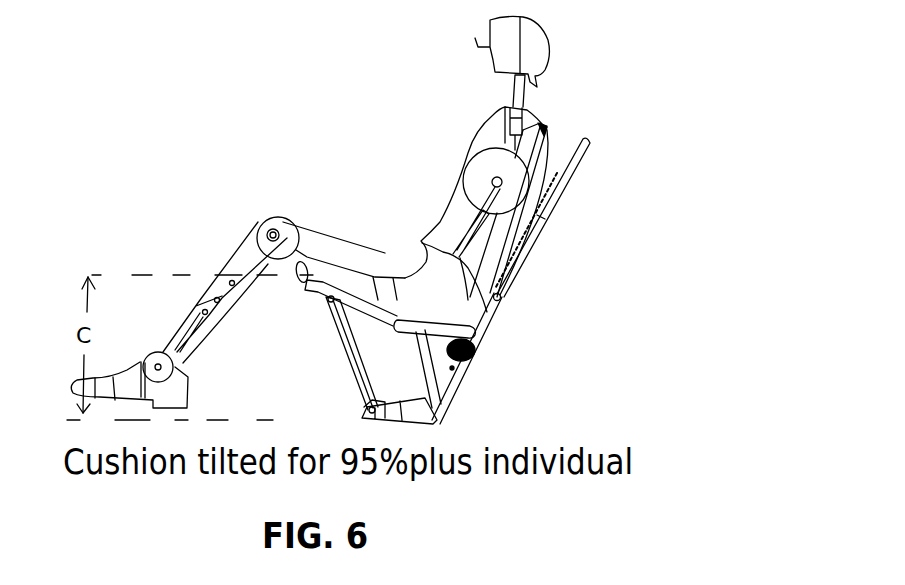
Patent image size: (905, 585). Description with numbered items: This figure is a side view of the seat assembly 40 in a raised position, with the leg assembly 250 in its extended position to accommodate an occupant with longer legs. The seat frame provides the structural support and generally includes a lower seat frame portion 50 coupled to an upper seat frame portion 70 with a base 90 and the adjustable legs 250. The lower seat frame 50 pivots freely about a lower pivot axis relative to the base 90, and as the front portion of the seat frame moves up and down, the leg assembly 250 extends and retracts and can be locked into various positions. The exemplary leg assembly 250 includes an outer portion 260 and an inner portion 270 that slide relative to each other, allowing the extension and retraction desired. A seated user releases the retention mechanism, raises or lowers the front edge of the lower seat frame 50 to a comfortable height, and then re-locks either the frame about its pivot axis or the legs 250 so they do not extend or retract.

The seat assembly 40 is at (523, 330).
The lower seat frame portion 50 is at (310, 284).
The upper seat frame portion 70 is at (580, 153).
The base 90 is at (437, 422).
The leg assembly 250 is at (364, 410).
The outer portion 260 is at (344, 347).
The inner portion 270 is at (328, 304).